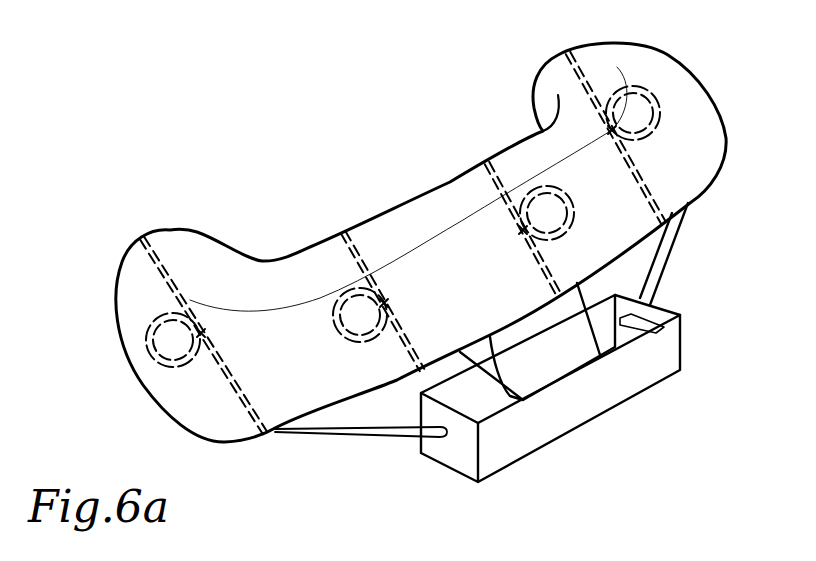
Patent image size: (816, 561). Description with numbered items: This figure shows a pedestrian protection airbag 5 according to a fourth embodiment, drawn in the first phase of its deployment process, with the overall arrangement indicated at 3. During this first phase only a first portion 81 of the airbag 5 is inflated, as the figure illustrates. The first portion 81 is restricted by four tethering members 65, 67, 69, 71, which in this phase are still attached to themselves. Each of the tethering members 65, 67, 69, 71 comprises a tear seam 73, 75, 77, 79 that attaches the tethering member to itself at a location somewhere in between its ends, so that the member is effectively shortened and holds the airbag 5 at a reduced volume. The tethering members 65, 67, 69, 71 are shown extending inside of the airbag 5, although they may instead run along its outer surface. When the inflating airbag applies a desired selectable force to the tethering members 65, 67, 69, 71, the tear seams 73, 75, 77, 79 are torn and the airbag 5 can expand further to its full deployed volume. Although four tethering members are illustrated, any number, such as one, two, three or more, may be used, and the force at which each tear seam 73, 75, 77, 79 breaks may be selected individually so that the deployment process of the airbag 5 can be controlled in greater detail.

The support assembly 3 is at (193, 78).
The airbag 5 is at (433, 212).
The tethering member 65 is at (543, 265).
The tethering member 67 is at (648, 197).
The tethering member 69 is at (395, 335).
The tethering member 71 is at (232, 373).
The tear seam 73 is at (612, 131).
The tear seam 75 is at (522, 230).
The tear seam 77 is at (384, 303).
The tear seam 79 is at (201, 333).
The first portion 81 is at (414, 265).